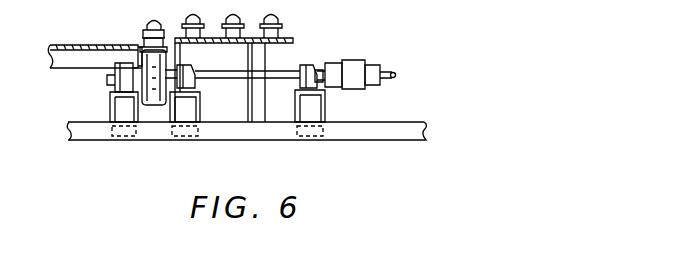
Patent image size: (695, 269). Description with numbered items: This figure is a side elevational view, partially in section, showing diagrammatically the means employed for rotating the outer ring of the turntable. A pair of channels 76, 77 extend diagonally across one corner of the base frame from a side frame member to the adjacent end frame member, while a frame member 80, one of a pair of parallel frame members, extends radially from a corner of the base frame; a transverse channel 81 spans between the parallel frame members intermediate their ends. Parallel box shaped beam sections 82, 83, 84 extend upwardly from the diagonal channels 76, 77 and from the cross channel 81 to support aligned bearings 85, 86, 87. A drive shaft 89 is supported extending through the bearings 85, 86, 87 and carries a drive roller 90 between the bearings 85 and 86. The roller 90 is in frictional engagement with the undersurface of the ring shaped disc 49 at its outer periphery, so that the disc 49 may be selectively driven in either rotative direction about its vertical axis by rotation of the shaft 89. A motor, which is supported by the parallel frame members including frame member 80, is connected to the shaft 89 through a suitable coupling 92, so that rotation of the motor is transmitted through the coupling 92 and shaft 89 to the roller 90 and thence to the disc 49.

The ring shaped disc 49 is at (83, 46).
The channel 76 is at (122, 137).
The channel 77 is at (180, 137).
The frame member 80 is at (397, 128).
The transverse channel 81 is at (303, 139).
The box shaped beam section 82 is at (109, 105).
The box shaped beam section 83 is at (200, 105).
The box shaped beam section 84 is at (326, 105).
The bearing 85 is at (126, 63).
The bearing 86 is at (181, 72).
The bearing 87 is at (309, 68).
The drive shaft 89 is at (283, 78).
The drive roller 90 is at (155, 105).
The coupling 92 is at (354, 66).